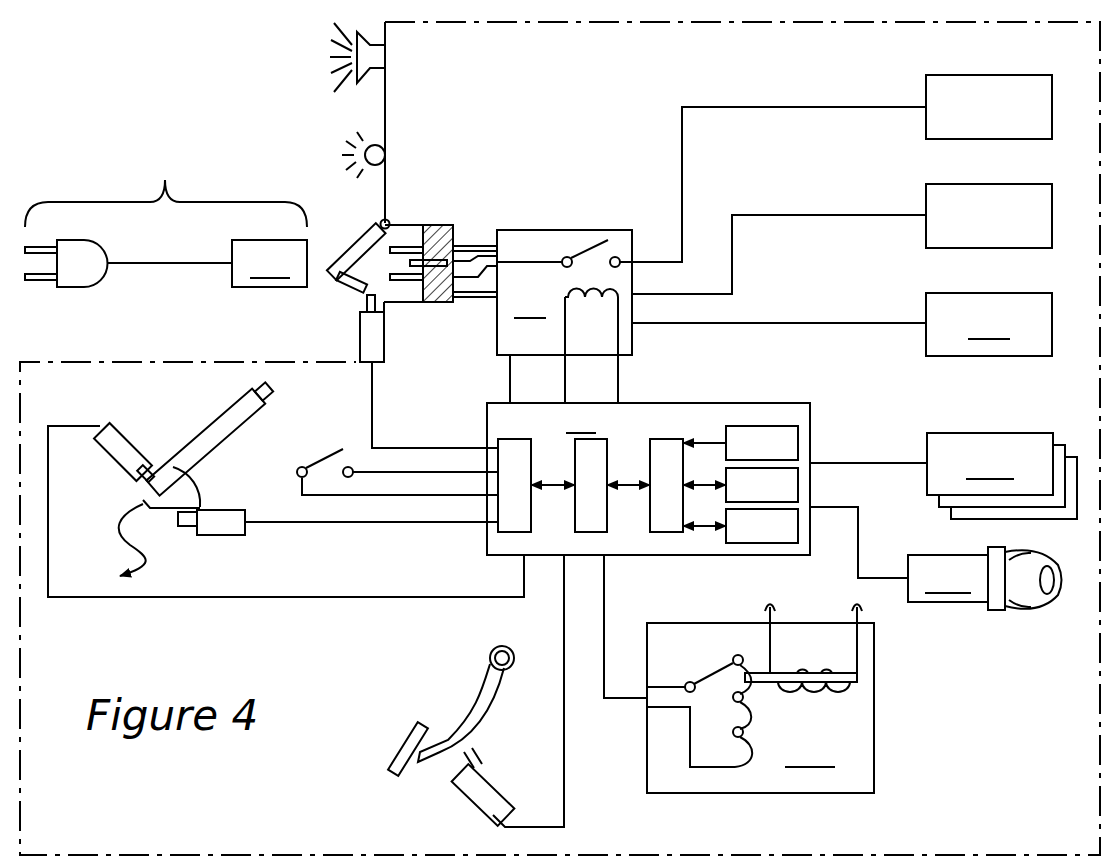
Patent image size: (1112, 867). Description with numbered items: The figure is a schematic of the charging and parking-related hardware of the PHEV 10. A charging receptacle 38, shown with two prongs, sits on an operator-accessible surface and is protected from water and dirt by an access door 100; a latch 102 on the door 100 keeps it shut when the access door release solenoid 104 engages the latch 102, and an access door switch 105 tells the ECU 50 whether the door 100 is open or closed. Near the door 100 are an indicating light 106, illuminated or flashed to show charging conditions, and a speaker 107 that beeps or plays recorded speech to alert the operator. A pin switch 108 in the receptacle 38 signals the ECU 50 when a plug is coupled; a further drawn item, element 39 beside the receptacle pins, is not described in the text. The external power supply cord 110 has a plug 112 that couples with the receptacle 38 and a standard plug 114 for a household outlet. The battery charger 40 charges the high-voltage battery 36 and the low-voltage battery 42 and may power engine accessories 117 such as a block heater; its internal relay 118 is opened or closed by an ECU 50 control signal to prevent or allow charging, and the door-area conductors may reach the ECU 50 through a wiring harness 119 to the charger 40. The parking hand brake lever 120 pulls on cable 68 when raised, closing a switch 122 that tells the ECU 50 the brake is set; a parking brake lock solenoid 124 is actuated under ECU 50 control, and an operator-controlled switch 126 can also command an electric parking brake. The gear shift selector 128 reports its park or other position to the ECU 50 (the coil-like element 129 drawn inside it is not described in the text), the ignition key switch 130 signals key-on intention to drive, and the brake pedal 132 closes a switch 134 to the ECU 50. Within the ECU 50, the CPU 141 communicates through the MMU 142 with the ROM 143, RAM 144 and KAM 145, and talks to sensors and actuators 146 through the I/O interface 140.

The PHEV 10 is at (296, 78).
The high-voltage battery 36 is at (1052, 108).
The receptacle 38 is at (432, 228).
The receptacle contacts 39 is at (400, 276).
The battery charger 40 is at (711, 255).
The low-voltage battery 42 is at (1052, 217).
The ECU 50 is at (485, 594).
The cable 68 is at (118, 543).
The access door 100 is at (336, 288).
The latch 102 is at (347, 284).
The access door release solenoid 104 is at (380, 362).
The access door switch 105 is at (392, 221).
The indicating light 106 is at (385, 140).
The speaker 107 is at (388, 65).
The pin switch 108 is at (413, 266).
The external power supply cord 110 is at (166, 188).
The plug 112 is at (207, 263).
The plug 114 is at (67, 284).
The engine accessories 117 is at (989, 324).
The relay 118 is at (572, 246).
The wiring harness 119 is at (471, 244).
The brake lever 120 is at (238, 430).
The switch 122 is at (135, 443).
The parking brake lock solenoid 124 is at (214, 536).
The operator-controlled switch 126 is at (312, 452).
The gear shift selector 128 is at (760, 698).
The heater coil 129 is at (818, 694).
The ignition key switch 130 is at (936, 558).
The brake pedal 132 is at (478, 707).
The switch 134 is at (470, 798).
The I/O interface 140 is at (513, 533).
The CPU 141 is at (607, 515).
The MMU 142 is at (665, 533).
The ROM 143 is at (765, 426).
The RAM 144 is at (798, 481).
The KAM 145 is at (770, 543).
The actuators 146 is at (943, 476).